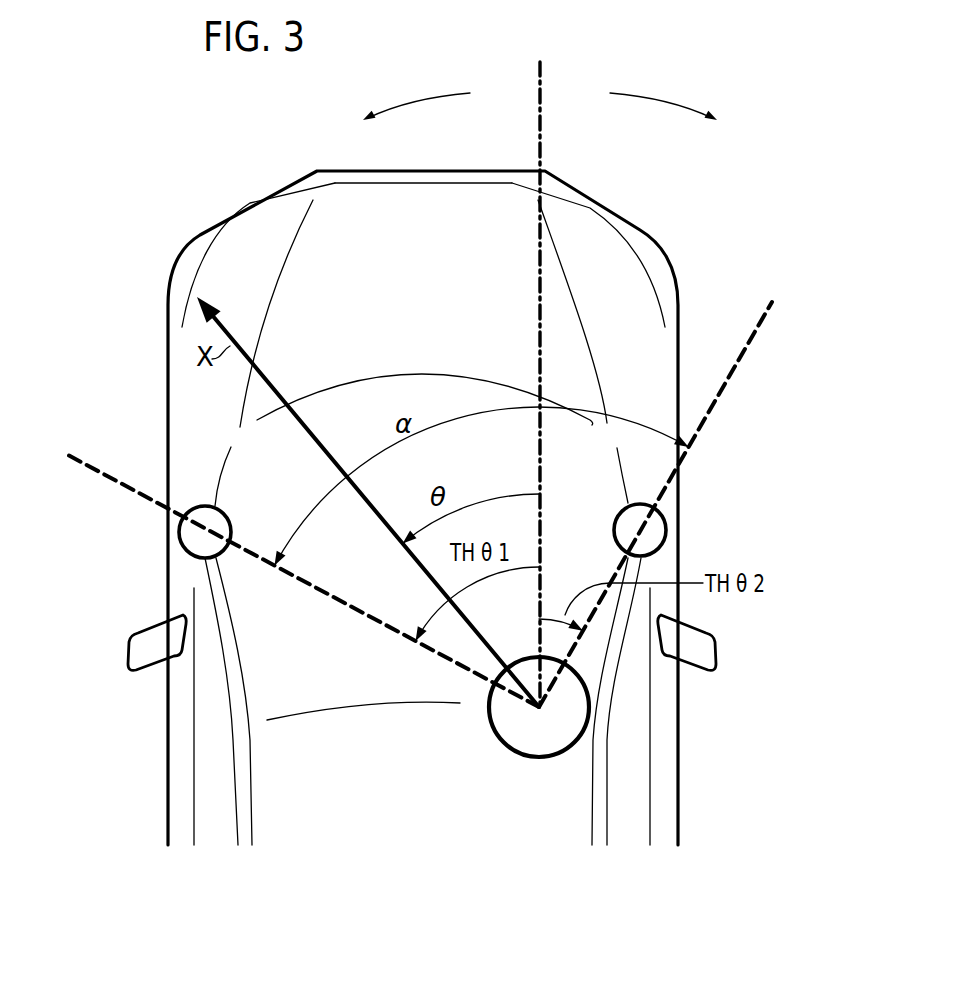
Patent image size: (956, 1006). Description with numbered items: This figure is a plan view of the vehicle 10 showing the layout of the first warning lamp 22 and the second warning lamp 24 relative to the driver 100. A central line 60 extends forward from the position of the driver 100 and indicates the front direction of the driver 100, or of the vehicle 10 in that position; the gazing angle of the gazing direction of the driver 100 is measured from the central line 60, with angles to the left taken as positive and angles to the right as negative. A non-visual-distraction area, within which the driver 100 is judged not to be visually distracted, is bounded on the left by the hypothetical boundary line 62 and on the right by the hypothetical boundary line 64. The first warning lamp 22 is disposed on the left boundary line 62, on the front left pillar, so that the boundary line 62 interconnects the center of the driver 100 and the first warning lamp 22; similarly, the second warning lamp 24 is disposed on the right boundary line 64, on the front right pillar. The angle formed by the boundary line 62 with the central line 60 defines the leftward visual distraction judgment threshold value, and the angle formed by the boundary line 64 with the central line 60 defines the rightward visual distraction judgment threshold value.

The vehicle 10 is at (250, 121).
The first warning lamp 22 is at (188, 546).
The second warning lamp 24 is at (620, 532).
The central line 60 is at (540, 143).
The visual distraction judgment boundary line 62 is at (310, 590).
The visual distraction judgment boundary line 64 is at (755, 337).
The driver 100 is at (503, 745).